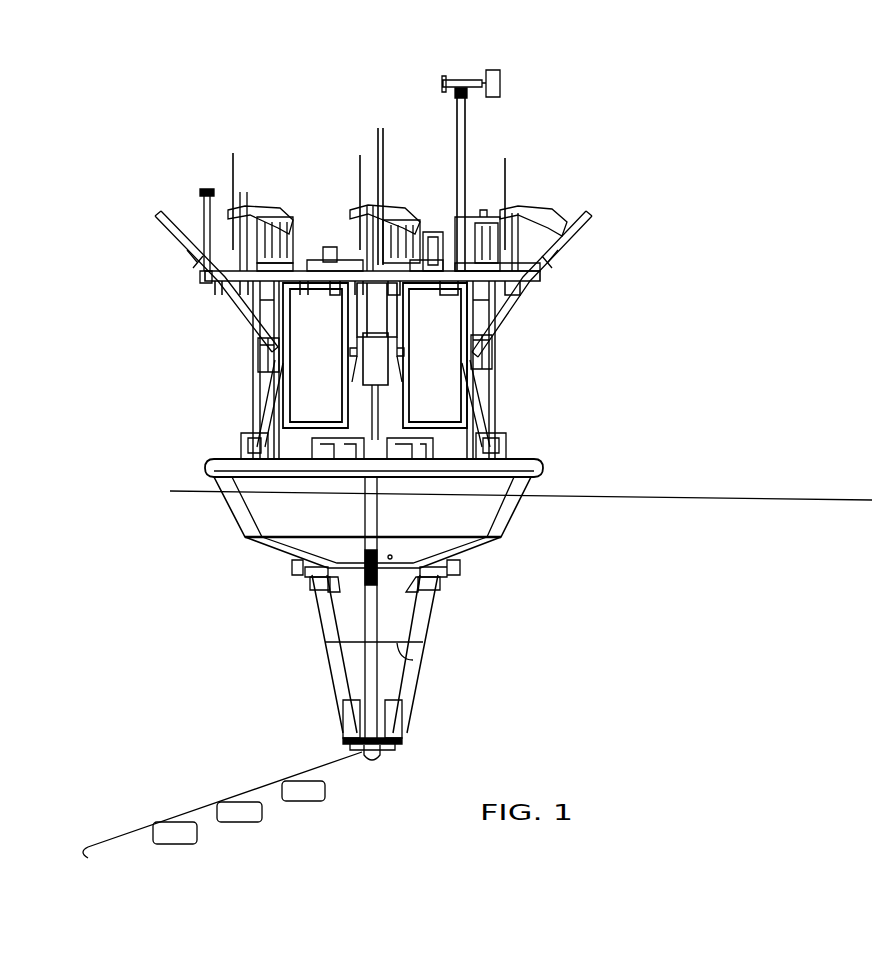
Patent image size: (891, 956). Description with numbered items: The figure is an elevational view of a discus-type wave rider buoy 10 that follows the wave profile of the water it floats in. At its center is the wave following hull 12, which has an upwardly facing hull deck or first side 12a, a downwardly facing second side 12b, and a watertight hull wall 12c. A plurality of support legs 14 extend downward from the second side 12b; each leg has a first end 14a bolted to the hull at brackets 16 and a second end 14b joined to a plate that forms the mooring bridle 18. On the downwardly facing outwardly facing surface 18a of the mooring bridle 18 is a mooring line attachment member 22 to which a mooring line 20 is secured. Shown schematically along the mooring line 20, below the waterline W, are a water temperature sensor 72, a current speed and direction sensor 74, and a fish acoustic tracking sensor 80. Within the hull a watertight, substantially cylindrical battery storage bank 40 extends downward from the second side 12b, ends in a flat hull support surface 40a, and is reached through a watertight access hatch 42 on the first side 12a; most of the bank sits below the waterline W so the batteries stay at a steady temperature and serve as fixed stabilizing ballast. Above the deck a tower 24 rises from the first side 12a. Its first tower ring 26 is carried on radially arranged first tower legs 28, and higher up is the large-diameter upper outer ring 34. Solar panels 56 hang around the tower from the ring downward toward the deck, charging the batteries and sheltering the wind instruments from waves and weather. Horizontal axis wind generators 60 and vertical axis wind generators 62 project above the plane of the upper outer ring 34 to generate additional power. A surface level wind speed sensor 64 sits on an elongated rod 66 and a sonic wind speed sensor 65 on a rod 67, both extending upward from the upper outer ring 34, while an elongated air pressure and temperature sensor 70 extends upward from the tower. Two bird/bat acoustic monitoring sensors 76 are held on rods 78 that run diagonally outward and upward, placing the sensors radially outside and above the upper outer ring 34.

The buoy 10 is at (128, 83).
The hull 12 is at (368, 499).
The first side 12a is at (507, 462).
The second side 12b is at (492, 546).
The hull wall 12c is at (456, 530).
The support legs 14 is at (402, 656).
The first end 14a is at (300, 586).
The second end 14b is at (405, 712).
The brackets 16 is at (447, 577).
The mooring bridle 18 is at (405, 742).
The outwardly facing surface 18a is at (350, 752).
The mooring line 20 is at (118, 842).
The mooring line attachment member 22 is at (382, 760).
The tower 24 is at (575, 350).
The first tower ring 26 is at (272, 365).
The first tower legs 28 is at (252, 433).
The upper outer ring 34 is at (232, 273).
The battery storage bank 40 is at (335, 612).
The hull support surface 40a is at (400, 658).
The access hatch 42 is at (410, 435).
The solar panels 56 is at (258, 352).
The horizontal axis wind generators 60 is at (245, 205).
The vertical axis wind generators 62 is at (290, 228).
The surface level wind speed sensor 64 is at (470, 83).
The wind speed sensor 65 is at (208, 188).
The rod 66 is at (470, 130).
The rod 67 is at (200, 262).
The air pressure and temperature sensor 70 is at (428, 240).
The water temperature sensor 72 is at (305, 801).
The current speed and direction sensor 74 is at (240, 822).
The bird/bat acoustic monitoring sensors 76 is at (160, 216).
The rod 78 is at (193, 262).
The fish acoustic tracking sensor 80 is at (172, 844).
The waterline W is at (832, 498).